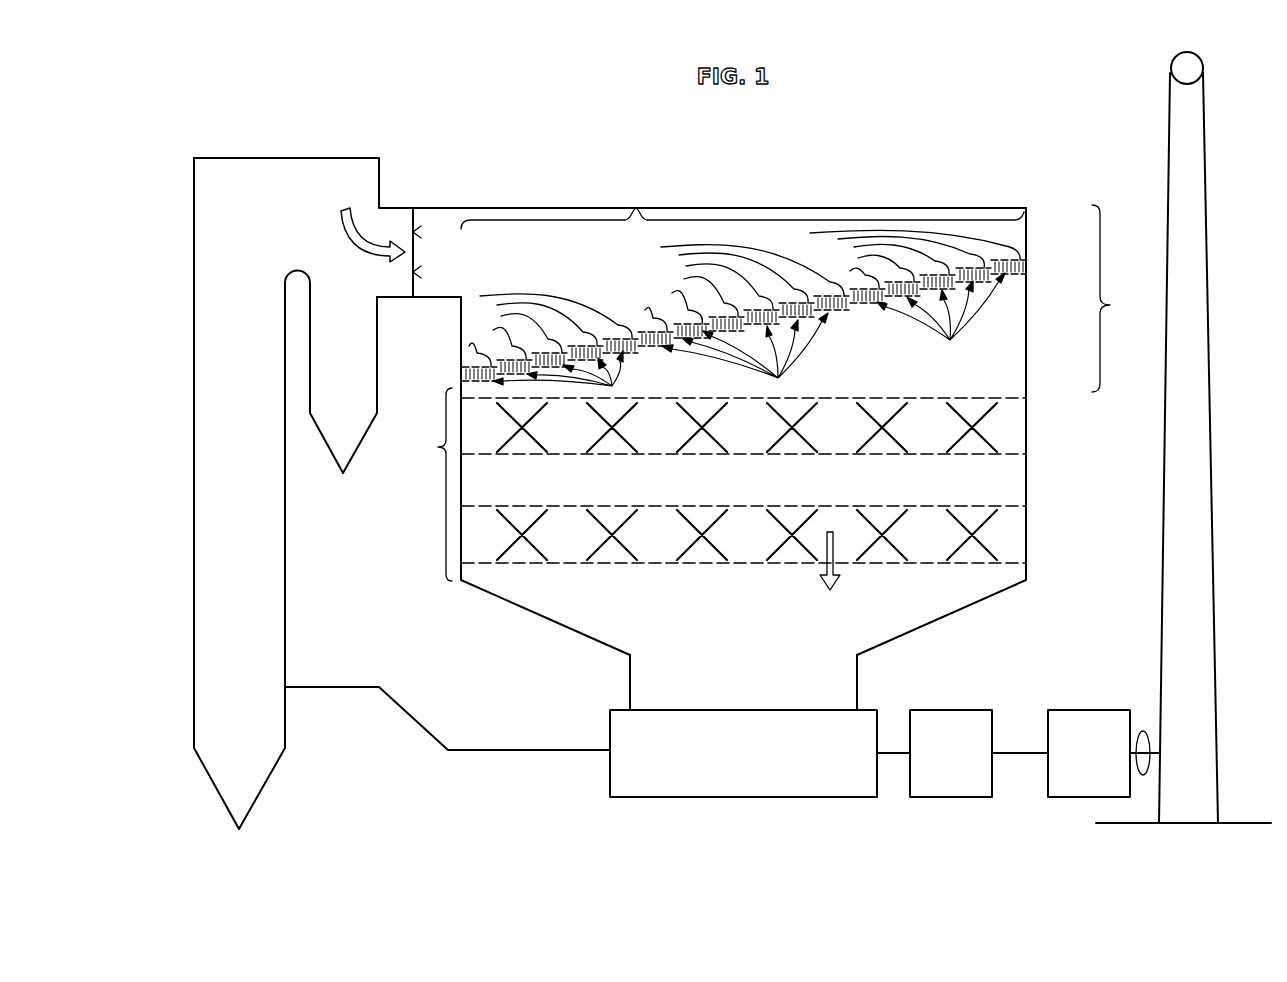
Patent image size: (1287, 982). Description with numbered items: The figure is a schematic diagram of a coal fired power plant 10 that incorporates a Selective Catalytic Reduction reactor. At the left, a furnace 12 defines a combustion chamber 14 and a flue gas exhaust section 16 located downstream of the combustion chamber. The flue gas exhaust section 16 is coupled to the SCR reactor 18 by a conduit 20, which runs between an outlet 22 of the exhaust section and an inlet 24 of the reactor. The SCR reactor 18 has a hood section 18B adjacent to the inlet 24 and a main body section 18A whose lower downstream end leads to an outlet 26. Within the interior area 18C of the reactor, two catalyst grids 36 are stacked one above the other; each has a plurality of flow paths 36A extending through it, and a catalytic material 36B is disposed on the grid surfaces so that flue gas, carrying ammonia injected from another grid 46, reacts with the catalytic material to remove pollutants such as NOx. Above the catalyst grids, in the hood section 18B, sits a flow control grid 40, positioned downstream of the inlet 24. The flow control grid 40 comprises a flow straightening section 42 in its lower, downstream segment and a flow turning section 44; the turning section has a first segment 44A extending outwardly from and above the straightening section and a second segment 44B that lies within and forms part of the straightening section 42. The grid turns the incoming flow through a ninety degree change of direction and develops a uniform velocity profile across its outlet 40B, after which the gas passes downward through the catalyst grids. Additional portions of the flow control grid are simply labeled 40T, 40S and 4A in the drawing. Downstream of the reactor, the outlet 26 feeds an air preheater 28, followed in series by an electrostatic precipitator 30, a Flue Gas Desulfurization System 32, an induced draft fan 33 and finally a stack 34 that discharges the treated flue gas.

The power plant 10 is at (180, 183).
The furnace 12 is at (279, 158).
The combustion chamber 14 is at (256, 598).
The flue gas exhaust section 16 is at (362, 218).
The Selective Catalytic Reduction (SCR) reactor 18 is at (1010, 397).
The main body section 18A is at (438, 447).
The hood section 18B is at (1126, 298).
The interior area 18C is at (995, 371).
The conduit 20 is at (429, 251).
The outlet 22 is at (378, 299).
The inlet 24 is at (449, 270).
The outlet 26 is at (857, 666).
The air preheater 28 is at (727, 800).
The electrostatic precipitator 30 is at (937, 800).
The Flue Gas Desulfurization System 32 is at (1064, 800).
The induced draft fan 33 is at (1143, 731).
The stack 34 is at (1212, 546).
The catalyst grid 36 is at (1027, 430).
The flow paths 36A is at (836, 540).
The catalytic material 36B is at (903, 441).
The flow control grid 40 is at (556, 217).
The housing top wall 40T is at (1027, 226).
The housing side wall 40S is at (460, 298).
The outlet 40B is at (858, 383).
The flow straightening section 42 is at (749, 336).
The flow turning section 44 is at (637, 208).
The first segment 44A is at (600, 305).
The second segment 44B is at (1027, 273).
The nozzle row 4A is at (1003, 250).
The grid 46 is at (412, 216).